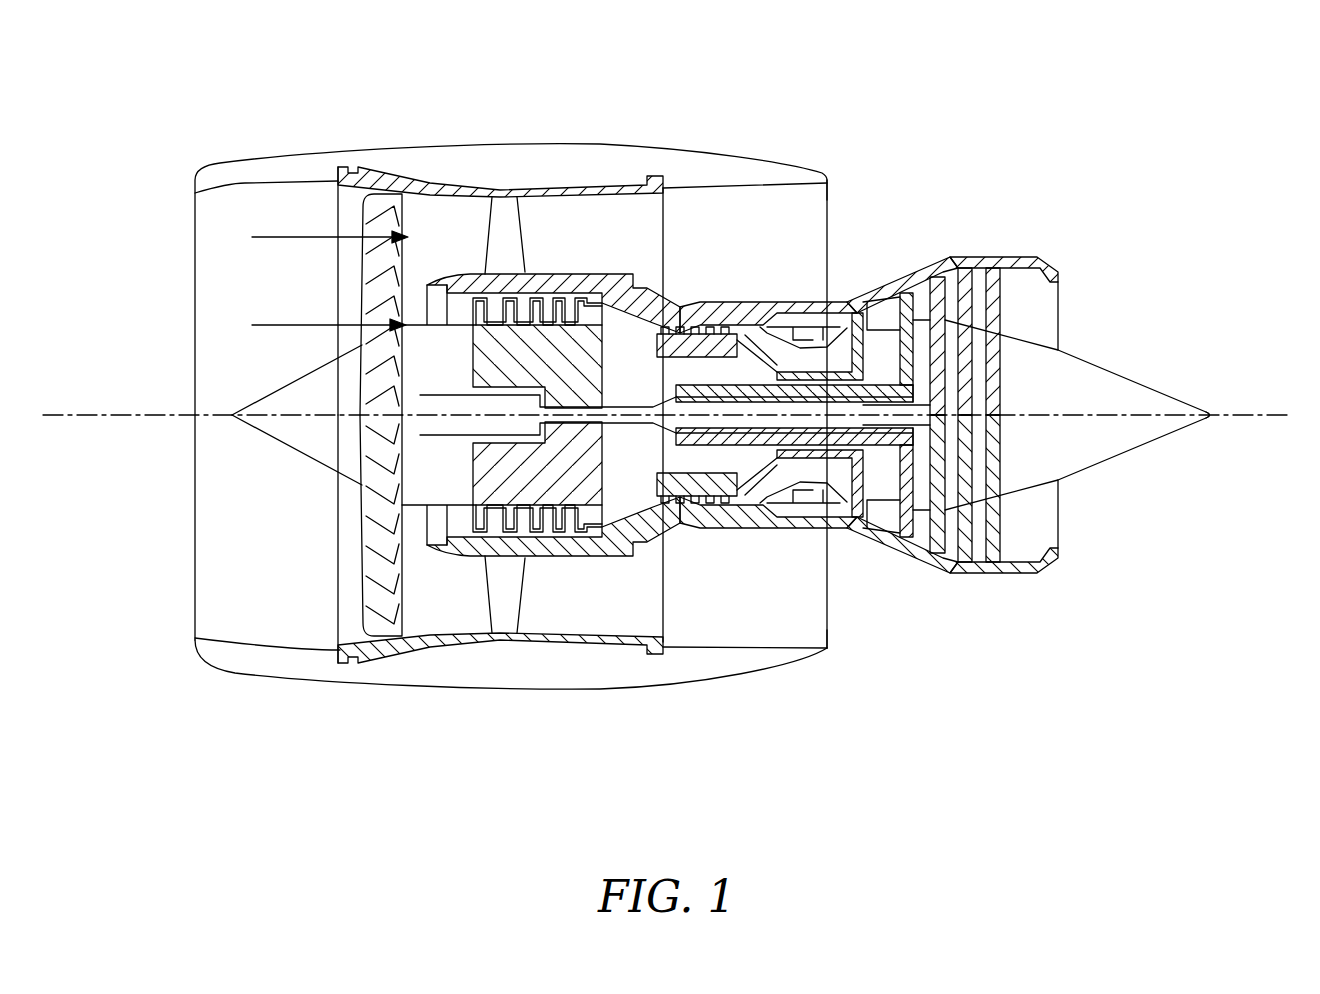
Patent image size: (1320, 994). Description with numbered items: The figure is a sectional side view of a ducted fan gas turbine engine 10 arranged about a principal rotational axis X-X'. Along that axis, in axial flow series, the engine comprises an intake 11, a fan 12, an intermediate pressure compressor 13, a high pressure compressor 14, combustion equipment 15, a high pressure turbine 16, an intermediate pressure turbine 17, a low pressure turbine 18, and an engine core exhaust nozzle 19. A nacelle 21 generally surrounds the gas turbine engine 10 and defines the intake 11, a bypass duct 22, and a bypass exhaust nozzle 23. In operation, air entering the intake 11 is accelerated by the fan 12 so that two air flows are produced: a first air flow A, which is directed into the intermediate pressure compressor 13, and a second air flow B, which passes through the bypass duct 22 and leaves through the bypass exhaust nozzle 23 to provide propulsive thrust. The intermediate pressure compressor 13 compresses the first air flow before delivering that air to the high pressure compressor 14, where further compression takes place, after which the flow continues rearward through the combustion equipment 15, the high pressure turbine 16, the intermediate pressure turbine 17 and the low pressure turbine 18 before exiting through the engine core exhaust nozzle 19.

The gas turbine engine 10 is at (667, 392).
The intake 11 is at (245, 183).
The fan 12 is at (362, 577).
The intermediate pressure compressor 13 is at (533, 560).
The high pressure compressor 14 is at (703, 327).
The combustion equipment 15 is at (777, 507).
The high pressure turbine 16 is at (840, 517).
The intermediate pressure turbine 17 is at (903, 290).
The low pressure turbine 18 is at (933, 558).
The engine core exhaust nozzle 19 is at (1050, 260).
The nacelle 21 is at (498, 170).
The bypass duct 22 is at (801, 253).
The bypass exhaust nozzle 23 is at (821, 174).